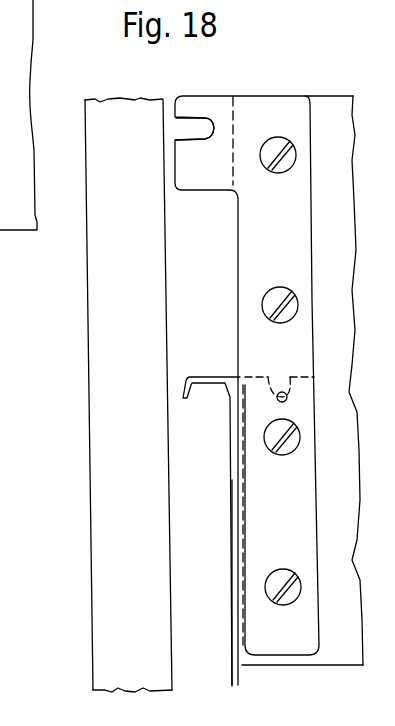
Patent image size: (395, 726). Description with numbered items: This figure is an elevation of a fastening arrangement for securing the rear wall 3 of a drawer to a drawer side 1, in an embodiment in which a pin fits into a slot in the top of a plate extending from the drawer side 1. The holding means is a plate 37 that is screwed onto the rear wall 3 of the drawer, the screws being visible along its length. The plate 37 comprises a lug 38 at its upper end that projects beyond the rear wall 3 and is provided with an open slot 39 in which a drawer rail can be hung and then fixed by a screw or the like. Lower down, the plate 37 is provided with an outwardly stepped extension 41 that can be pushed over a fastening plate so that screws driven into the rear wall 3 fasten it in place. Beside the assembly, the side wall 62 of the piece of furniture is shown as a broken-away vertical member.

The drawer side 1 is at (238, 478).
The rear wall 3 is at (326, 122).
The plate 37 is at (262, 240).
The lug 38 is at (198, 130).
The open slot 39 is at (195, 129).
The outwardly stepped extension 41 is at (277, 636).
The side wall of the piece of furniture 62 is at (113, 400).